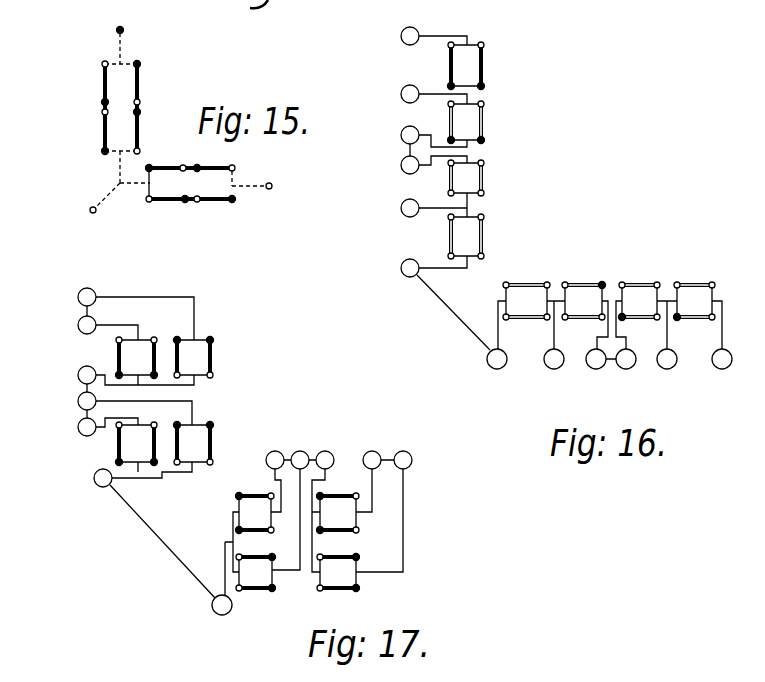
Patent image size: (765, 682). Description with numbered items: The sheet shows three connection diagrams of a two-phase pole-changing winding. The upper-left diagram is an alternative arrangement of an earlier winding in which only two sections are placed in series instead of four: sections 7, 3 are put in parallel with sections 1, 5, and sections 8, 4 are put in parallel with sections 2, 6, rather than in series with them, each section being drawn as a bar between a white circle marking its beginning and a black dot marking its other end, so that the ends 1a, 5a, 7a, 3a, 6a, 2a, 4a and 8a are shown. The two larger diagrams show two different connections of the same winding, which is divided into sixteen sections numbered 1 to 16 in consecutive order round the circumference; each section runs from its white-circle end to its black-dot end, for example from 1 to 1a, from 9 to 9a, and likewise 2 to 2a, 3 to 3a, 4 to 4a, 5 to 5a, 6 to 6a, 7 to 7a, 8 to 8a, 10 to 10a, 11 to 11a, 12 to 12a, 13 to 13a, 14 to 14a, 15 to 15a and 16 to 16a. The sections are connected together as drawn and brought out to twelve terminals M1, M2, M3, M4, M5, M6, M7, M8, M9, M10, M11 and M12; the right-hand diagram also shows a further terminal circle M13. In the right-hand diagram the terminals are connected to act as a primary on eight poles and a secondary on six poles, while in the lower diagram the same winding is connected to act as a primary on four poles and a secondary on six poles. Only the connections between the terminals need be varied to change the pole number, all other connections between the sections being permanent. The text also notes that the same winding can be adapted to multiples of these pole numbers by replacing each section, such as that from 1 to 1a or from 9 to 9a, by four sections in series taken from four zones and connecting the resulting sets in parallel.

In FIG. 15, the winding section 1 is at (100, 66).
In FIG. 16, the winding section 1 is at (441, 45).
In FIG. 17, the winding section 1 is at (114, 338).
In FIG. 15, the winding section end 1a is at (97, 103).
In FIG. 16, the winding section end 1a is at (441, 84).
In FIG. 17, the winding section end 1a is at (113, 370).
In FIG. 15, the winding section 2 is at (233, 162).
In FIG. 16, the winding section 2 is at (711, 278).
In FIG. 17, the winding section 2 is at (114, 426).
In FIG. 15, the winding section end 2a is at (200, 162).
In FIG. 16, the winding section end 2a is at (678, 278).
In FIG. 17, the winding section end 2a is at (111, 460).
In FIG. 15, the winding section 3 is at (142, 151).
In FIG. 16, the winding section 3 is at (444, 254).
In FIG. 17, the winding section 3 is at (355, 489).
In FIG. 15, the winding section end 3a is at (146, 116).
In FIG. 16, the winding section end 3a is at (442, 217).
In FIG. 17, the winding section end 3a is at (326, 490).
In FIG. 15, the winding section 4 is at (147, 206).
In FIG. 16, the winding section 4 is at (506, 278).
In FIG. 17, the winding section 4 is at (270, 489).
In FIG. 15, the winding section end 4a is at (183, 206).
In FIG. 16, the winding section end 4a is at (547, 278).
In FIG. 17, the winding section end 4a is at (241, 490).
In FIG. 15, the winding section 5 is at (98, 115).
In FIG. 16, the winding section 5 is at (445, 104).
In FIG. 17, the winding section 5 is at (181, 370).
In FIG. 15, the winding section end 5a is at (97, 151).
In FIG. 16, the winding section end 5a is at (444, 136).
In FIG. 17, the winding section end 5a is at (178, 334).
In FIG. 15, the winding section 6 is at (182, 162).
In FIG. 16, the winding section 6 is at (656, 278).
In FIG. 17, the winding section 6 is at (181, 456).
In FIG. 15, the winding section end 6a is at (155, 162).
In FIG. 16, the winding section end 6a is at (622, 278).
In FIG. 17, the winding section end 6a is at (182, 419).
In FIG. 15, the winding section 7 is at (142, 104).
In FIG. 16, the winding section 7 is at (445, 192).
In FIG. 17, the winding section 7 is at (322, 552).
In FIG. 15, the winding section end 7a is at (147, 66).
In FIG. 16, the winding section end 7a is at (443, 162).
In FIG. 17, the winding section end 7a is at (361, 552).
In FIG. 15, the winding section 8 is at (197, 206).
In FIG. 16, the winding section 8 is at (564, 278).
In FIG. 17, the winding section 8 is at (239, 552).
In FIG. 15, the winding section end 8a is at (234, 206).
In FIG. 16, the winding section end 8a is at (603, 279).
In FIG. 17, the winding section end 8a is at (278, 552).
In FIG. 16, the winding section 9 is at (486, 46).
In FIG. 17, the winding section 9 is at (155, 334).
In FIG. 16, the winding section end 9a is at (489, 88).
In FIG. 17, the winding section end 9a is at (148, 371).
In FIG. 16, the winding section 10 is at (714, 325).
In FIG. 17, the winding section 10 is at (158, 419).
In FIG. 16, the winding section end 10a is at (679, 325).
In FIG. 17, the winding section end 10a is at (145, 457).
In FIG. 16, the winding section 11 is at (489, 256).
In FIG. 17, the winding section 11 is at (364, 529).
In FIG. 16, the winding section end 11a is at (493, 217).
In FIG. 17, the winding section end 11a is at (330, 525).
In FIG. 16, the winding section 12 is at (507, 325).
In FIG. 17, the winding section 12 is at (279, 534).
In FIG. 16, the winding section end 12a is at (548, 325).
In FIG. 17, the winding section end 12a is at (250, 525).
In FIG. 16, the winding section 13 is at (489, 104).
In FIG. 17, the winding section 13 is at (218, 374).
In FIG. 16, the winding section end 13a is at (493, 140).
In FIG. 17, the winding section end 13a is at (218, 334).
In FIG. 16, the winding section 14 is at (658, 325).
In FIG. 17, the winding section 14 is at (217, 463).
In FIG. 16, the winding section end 14a is at (625, 325).
In FIG. 17, the winding section end 14a is at (220, 424).
In FIG. 16, the winding section 15 is at (489, 193).
In FIG. 17, the winding section 15 is at (323, 595).
In FIG. 16, the winding section end 15a is at (493, 163).
In FIG. 17, the winding section end 15a is at (364, 595).
In FIG. 16, the winding section 16 is at (566, 325).
In FIG. 17, the winding section 16 is at (243, 595).
In FIG. 16, the winding section end 16a is at (602, 325).
In FIG. 17, the winding section end 16a is at (272, 595).
In FIG. 16, the terminal M1 is at (396, 36).
In FIG. 17, the terminal M1 is at (75, 325).
In FIG. 16, the terminal M2 is at (396, 94).
In FIG. 17, the terminal M2 is at (74, 375).
In FIG. 16, the terminal M3 is at (396, 135).
In FIG. 16, the terminal M4 is at (396, 165).
In FIG. 17, the terminal M4 is at (404, 450).
In FIG. 16, the terminal M5 is at (396, 208).
In FIG. 17, the terminal M5 is at (327, 450).
In FIG. 16, the terminal M6 is at (396, 268).
In FIG. 17, the terminal M6 is at (373, 450).
In FIG. 16, the terminal M7 is at (496, 369).
In FIG. 17, the terminal M7 is at (276, 450).
In FIG. 16, the terminal M8 is at (553, 369).
In FIG. 17, the terminal M8 is at (222, 615).
In FIG. 16, the terminal M9 is at (596, 369).
In FIG. 17, the terminal M9 is at (301, 450).
In FIG. 16, the terminal M10 is at (628, 369).
In FIG. 17, the terminal M10 is at (72, 401).
In FIG. 16, the terminal M11 is at (670, 369).
In FIG. 17, the terminal M11 is at (95, 482).
In FIG. 16, the terminal M12 is at (724, 369).
In FIG. 17, the terminal M12 is at (72, 427).
In FIG. 17, the electromagnet M13 is at (76, 297).